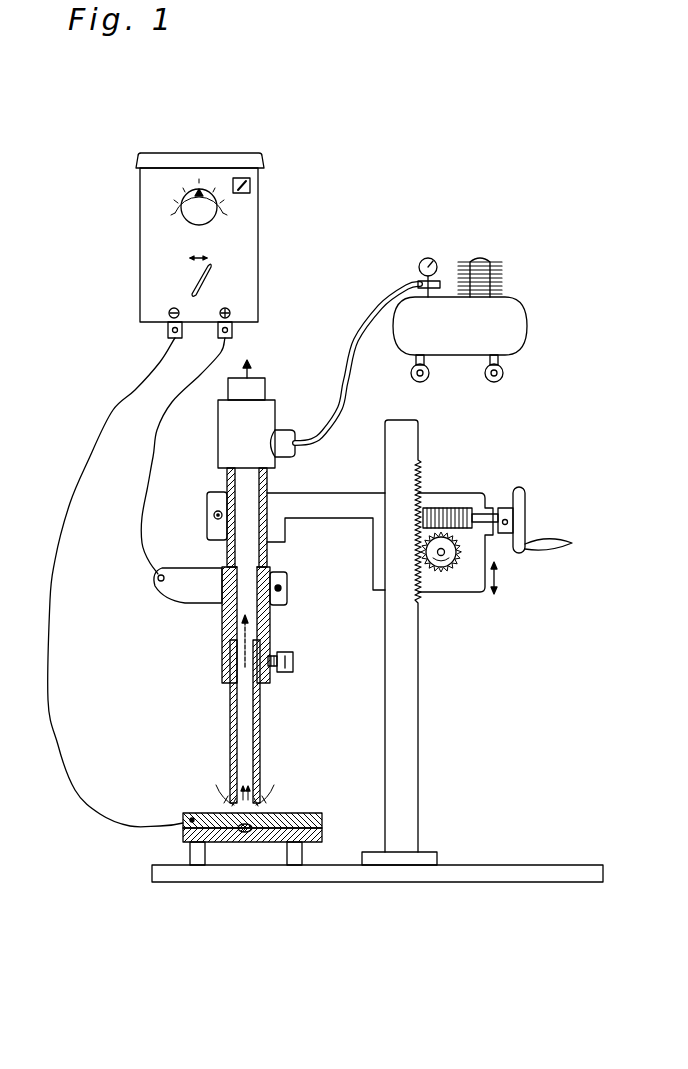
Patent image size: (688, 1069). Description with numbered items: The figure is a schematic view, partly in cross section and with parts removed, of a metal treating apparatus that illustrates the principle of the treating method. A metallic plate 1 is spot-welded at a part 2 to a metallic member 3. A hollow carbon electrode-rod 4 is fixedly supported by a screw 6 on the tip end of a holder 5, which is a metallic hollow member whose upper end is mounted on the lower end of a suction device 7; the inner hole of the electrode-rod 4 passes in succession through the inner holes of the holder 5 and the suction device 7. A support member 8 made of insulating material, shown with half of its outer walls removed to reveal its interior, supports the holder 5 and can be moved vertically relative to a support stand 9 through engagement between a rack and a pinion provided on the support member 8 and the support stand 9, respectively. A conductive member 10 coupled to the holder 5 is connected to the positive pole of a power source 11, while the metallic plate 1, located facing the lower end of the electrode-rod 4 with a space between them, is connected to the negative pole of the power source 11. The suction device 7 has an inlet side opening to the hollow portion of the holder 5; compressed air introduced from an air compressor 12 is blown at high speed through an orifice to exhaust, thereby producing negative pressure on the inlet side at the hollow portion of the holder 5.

The metallic plate 1 is at (297, 822).
The spot-welded part 2 is at (243, 836).
The metallic member 3 is at (316, 840).
The hollow carbon electrode-rod 4 is at (261, 728).
The holder 5 is at (268, 578).
The screw 6 is at (268, 660).
The suction device 7 is at (222, 430).
The support member 8 is at (334, 500).
The support stand 9 is at (412, 718).
The conductive member 10 is at (185, 575).
The power source 11 is at (252, 226).
The air compressor 12 is at (500, 312).